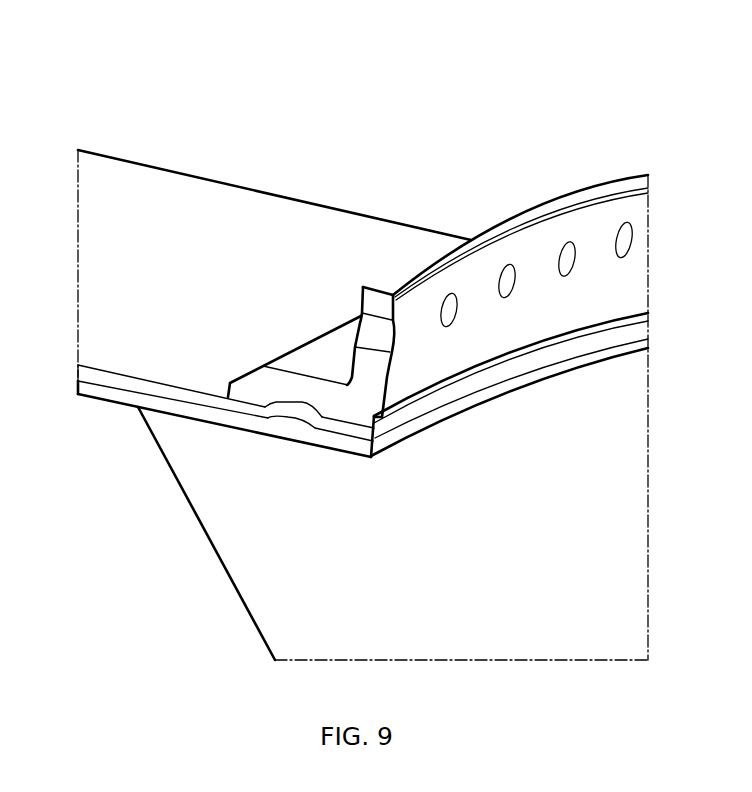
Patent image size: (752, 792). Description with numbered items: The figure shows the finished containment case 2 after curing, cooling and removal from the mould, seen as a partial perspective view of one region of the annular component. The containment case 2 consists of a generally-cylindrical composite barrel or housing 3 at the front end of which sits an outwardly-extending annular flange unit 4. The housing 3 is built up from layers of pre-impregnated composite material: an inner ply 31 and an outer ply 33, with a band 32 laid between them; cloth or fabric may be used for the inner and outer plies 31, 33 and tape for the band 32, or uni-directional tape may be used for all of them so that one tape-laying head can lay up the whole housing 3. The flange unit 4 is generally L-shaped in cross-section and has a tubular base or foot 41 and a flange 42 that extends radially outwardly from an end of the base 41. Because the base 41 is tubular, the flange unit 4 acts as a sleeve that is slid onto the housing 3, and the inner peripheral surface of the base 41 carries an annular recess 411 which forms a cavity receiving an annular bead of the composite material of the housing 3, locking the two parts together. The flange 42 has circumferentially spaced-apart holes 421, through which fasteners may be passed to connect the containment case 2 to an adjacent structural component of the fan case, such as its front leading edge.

The containment case 2 is at (154, 94).
The housing 3 is at (250, 343).
The inner ply 31 is at (77, 390).
The band 32 is at (300, 431).
The outer ply 33 is at (77, 372).
The flange unit 4 is at (470, 283).
The base 41 is at (337, 358).
The annular recess 411 is at (295, 418).
The flange 42 is at (640, 212).
The holes 421 is at (631, 243).